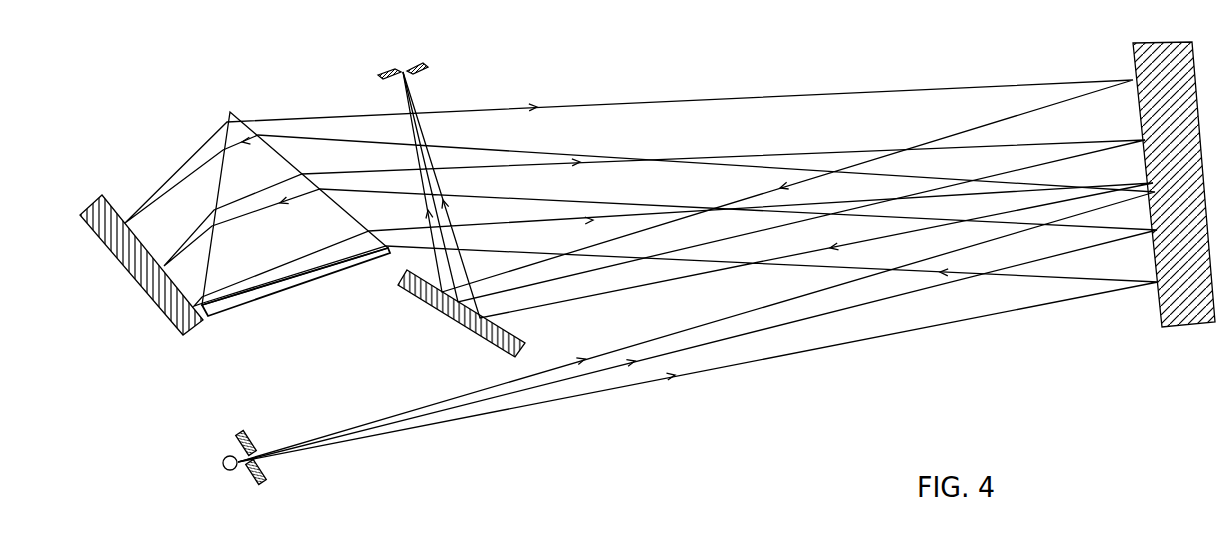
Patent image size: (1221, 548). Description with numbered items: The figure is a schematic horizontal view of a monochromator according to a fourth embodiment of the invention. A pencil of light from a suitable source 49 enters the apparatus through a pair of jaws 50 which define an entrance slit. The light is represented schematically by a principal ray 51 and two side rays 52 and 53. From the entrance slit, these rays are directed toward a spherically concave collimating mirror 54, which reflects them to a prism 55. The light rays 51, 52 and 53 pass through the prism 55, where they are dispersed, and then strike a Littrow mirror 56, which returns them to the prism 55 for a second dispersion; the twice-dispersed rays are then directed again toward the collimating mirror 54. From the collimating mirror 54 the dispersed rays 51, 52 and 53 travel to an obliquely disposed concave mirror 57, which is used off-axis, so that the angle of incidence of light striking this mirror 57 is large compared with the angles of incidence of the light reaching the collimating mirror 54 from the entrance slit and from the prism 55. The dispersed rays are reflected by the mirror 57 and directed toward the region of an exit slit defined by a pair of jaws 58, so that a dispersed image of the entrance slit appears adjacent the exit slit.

The source 49 is at (229, 470).
The pair of jaws 50 is at (258, 485).
The principal ray 51 is at (557, 167).
The side ray 52 is at (548, 223).
The side ray 53 is at (520, 148).
The spherically concave collimating mirror 54 is at (1175, 333).
The prism 55 is at (284, 291).
The Littrow mirror 56 is at (197, 324).
The obliquely disposed concave mirror 57 is at (485, 340).
The pair of jaws 58 is at (425, 65).